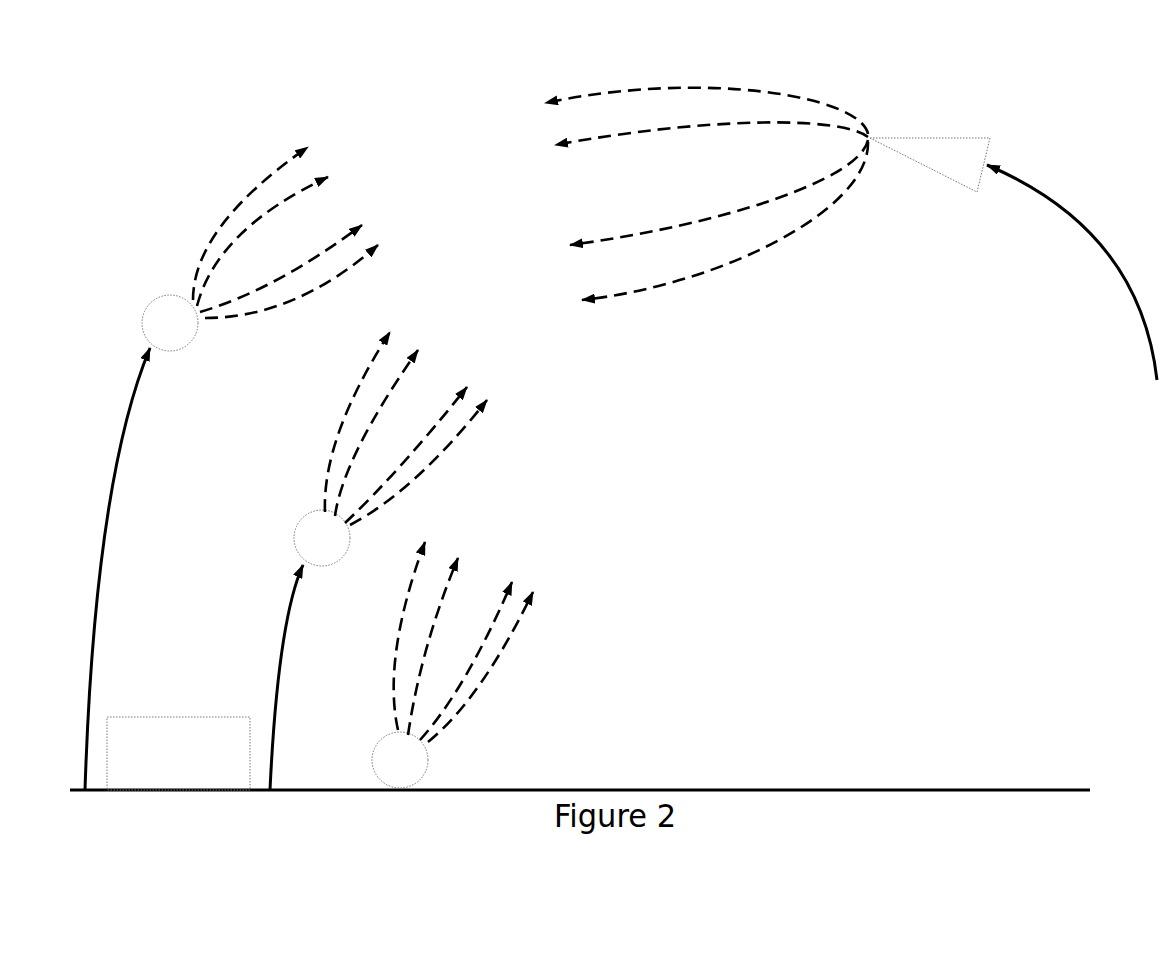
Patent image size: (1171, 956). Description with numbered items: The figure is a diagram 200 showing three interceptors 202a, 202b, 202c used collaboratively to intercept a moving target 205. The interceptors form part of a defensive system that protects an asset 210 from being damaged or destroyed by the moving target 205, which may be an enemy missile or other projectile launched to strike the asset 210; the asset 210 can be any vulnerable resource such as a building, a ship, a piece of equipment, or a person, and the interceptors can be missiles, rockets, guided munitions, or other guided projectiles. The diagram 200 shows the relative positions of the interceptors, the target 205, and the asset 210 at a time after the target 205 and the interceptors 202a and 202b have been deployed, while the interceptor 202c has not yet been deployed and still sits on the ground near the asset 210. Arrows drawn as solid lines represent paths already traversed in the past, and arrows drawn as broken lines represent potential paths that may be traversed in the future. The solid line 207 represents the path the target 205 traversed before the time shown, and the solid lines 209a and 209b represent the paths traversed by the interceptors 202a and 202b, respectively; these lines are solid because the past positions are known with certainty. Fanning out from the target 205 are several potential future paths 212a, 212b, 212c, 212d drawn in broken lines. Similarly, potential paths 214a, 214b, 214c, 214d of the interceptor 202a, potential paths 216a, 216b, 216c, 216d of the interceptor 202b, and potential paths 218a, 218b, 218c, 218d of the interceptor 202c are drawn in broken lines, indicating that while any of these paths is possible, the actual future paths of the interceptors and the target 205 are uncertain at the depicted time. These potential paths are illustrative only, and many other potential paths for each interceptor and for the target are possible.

The diagram 200 is at (409, 49).
The interceptor 202a is at (170, 323).
The interceptor 202b is at (322, 538).
The interceptor 202c is at (400, 760).
The moving target 205 is at (930, 165).
The solid line 207 is at (1072, 272).
The solid line 209a is at (127, 569).
The solid line 209b is at (303, 677).
The asset 210 is at (178, 753).
The potential path 212a is at (706, 107).
The potential path 212b is at (708, 133).
The potential path 212c is at (714, 192).
The potential path 212d is at (715, 221).
The potential path 214a is at (251, 213).
The potential path 214b is at (282, 230).
The potential path 214c is at (299, 258).
The potential path 214d is at (314, 281).
The potential path 216a is at (357, 410).
The potential path 216b is at (395, 416).
The potential path 216c is at (420, 437).
The potential path 216d is at (443, 458).
The potential path 218a is at (400, 628).
The potential path 218b is at (450, 625).
The potential path 218c is at (480, 642).
The potential path 218d is at (508, 656).